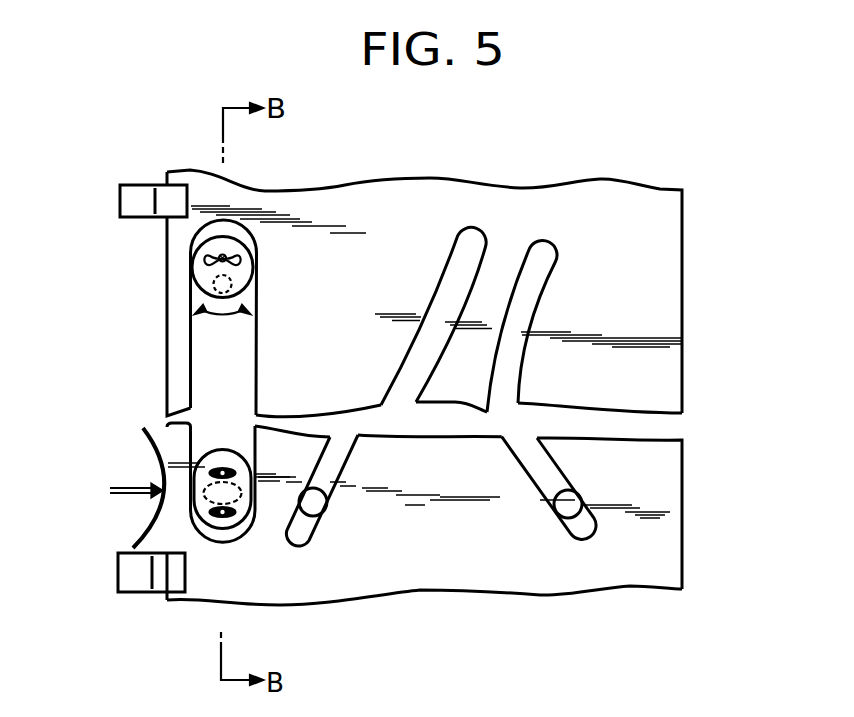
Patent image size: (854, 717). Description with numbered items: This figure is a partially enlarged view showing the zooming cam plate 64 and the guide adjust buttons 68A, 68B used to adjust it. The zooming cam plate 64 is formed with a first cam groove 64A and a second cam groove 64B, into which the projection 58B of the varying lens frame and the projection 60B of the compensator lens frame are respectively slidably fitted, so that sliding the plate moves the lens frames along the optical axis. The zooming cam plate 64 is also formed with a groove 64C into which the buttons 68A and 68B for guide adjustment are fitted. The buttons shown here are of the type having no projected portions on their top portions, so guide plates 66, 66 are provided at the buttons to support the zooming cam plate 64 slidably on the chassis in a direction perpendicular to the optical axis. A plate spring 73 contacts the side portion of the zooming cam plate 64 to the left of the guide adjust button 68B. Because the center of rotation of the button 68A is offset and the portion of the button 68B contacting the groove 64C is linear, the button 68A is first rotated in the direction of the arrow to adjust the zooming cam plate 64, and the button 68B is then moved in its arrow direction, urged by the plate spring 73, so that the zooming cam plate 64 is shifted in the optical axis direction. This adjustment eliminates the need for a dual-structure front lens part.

The zooming cam plate 64 is at (683, 355).
The first cam groove 64A is at (447, 277).
The second cam groove 64B is at (540, 275).
The groove 64C is at (205, 350).
The guide plate 66 is at (120, 200).
The guide adjust button 68A is at (193, 268).
The guide adjust button 68B is at (222, 450).
The plate spring 73 is at (146, 436).
The projection 58B is at (318, 506).
The projection 60B is at (573, 536).